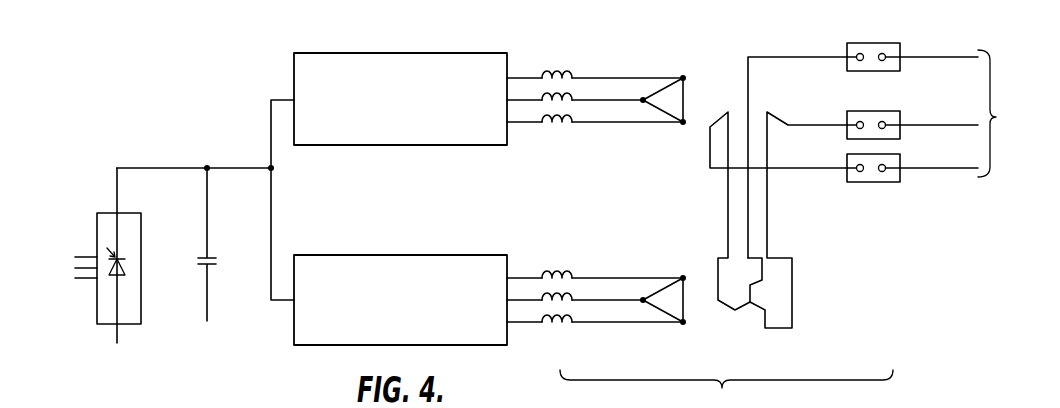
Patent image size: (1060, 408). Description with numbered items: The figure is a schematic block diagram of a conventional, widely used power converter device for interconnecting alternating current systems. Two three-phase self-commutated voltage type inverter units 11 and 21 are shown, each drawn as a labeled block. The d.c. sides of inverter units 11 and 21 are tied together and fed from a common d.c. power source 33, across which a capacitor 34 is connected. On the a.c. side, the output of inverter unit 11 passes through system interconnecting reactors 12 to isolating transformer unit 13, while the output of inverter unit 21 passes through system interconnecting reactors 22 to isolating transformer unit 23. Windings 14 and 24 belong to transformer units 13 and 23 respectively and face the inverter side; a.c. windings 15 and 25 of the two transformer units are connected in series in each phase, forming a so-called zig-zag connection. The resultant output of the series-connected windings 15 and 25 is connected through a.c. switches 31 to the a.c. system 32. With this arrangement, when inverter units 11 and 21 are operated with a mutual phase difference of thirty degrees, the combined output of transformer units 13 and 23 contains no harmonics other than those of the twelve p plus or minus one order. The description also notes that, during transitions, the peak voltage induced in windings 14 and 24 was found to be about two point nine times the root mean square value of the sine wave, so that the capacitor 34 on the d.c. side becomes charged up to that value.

The self-commutated voltage type inverter unit 11 is at (404, 53).
The system interconnecting reactor 12 is at (557, 131).
The isolating transformer unit 13 is at (722, 32).
The winding of transformer unit 14 is at (675, 126).
The a.c. winding 15 is at (760, 52).
The self-commutated voltage type inverter unit 21 is at (388, 255).
The system interconnecting reactor 22 is at (553, 268).
The isolating transformer unit 23 is at (713, 361).
The winding of transformer unit 24 is at (672, 275).
The a.c. winding 25 is at (753, 320).
The a.c. switch 31 is at (862, 43).
The a.c. system 32 is at (942, 92).
The d.c. power source 33 is at (128, 315).
The capacitor 34 is at (200, 258).